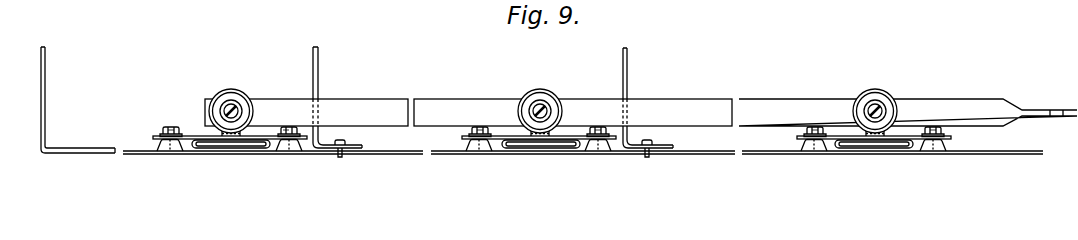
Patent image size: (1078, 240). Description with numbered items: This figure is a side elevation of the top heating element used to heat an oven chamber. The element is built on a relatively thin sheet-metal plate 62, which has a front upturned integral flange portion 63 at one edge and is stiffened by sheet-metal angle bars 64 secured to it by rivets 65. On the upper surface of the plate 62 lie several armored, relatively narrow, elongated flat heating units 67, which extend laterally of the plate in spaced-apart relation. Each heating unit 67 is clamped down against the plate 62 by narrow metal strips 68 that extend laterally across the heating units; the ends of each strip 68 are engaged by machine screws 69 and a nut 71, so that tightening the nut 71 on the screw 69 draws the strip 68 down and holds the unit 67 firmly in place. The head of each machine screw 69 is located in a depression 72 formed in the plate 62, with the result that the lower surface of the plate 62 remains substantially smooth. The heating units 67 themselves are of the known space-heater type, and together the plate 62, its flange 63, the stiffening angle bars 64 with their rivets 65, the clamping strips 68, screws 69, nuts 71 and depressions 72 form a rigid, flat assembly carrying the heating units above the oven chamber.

The sheet-metal plate 62 is at (72, 157).
The front upturned integral flange portion 63 is at (40, 97).
The sheet-metal angle bars 64 is at (318, 76).
The rivets 65 is at (340, 158).
The heating units 67 is at (257, 150).
The narrow metal strips 68 is at (152, 137).
The machine screws 69 is at (172, 128).
The nut 71 is at (181, 131).
The depressions 72 is at (162, 151).